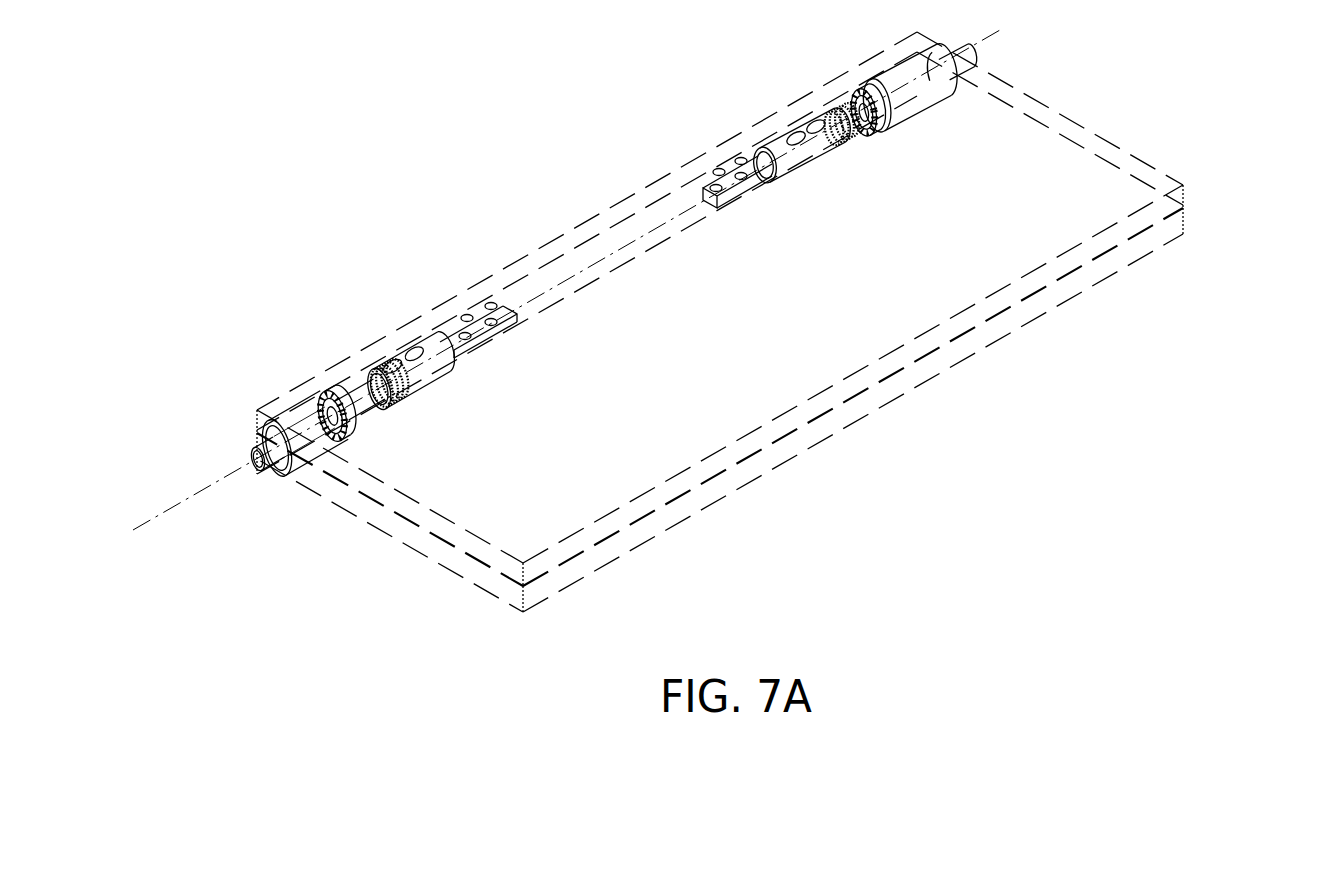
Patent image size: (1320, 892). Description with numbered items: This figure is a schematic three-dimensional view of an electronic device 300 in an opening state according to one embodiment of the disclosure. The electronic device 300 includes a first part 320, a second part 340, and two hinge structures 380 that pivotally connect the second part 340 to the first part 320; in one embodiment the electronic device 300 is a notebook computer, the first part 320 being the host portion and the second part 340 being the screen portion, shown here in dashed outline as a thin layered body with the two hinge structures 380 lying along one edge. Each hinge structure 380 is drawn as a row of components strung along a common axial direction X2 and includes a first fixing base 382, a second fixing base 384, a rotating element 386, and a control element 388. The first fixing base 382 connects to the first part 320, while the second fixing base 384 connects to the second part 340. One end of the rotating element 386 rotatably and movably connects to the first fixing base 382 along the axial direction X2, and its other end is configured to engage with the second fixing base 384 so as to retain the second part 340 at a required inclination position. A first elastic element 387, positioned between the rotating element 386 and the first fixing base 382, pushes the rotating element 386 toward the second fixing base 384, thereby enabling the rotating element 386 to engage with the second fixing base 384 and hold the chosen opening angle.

The electronic device 300 is at (238, 242).
The first part 320 is at (1187, 221).
The second part 340 is at (1187, 191).
The hinge structure 380 is at (233, 425).
The first fixing base 382 is at (430, 342).
The second fixing base 384 is at (300, 474).
The rotating element 386 is at (355, 390).
The first elastic element 387 is at (402, 360).
The control element 388 is at (246, 456).
The axial direction X2 is at (156, 520).